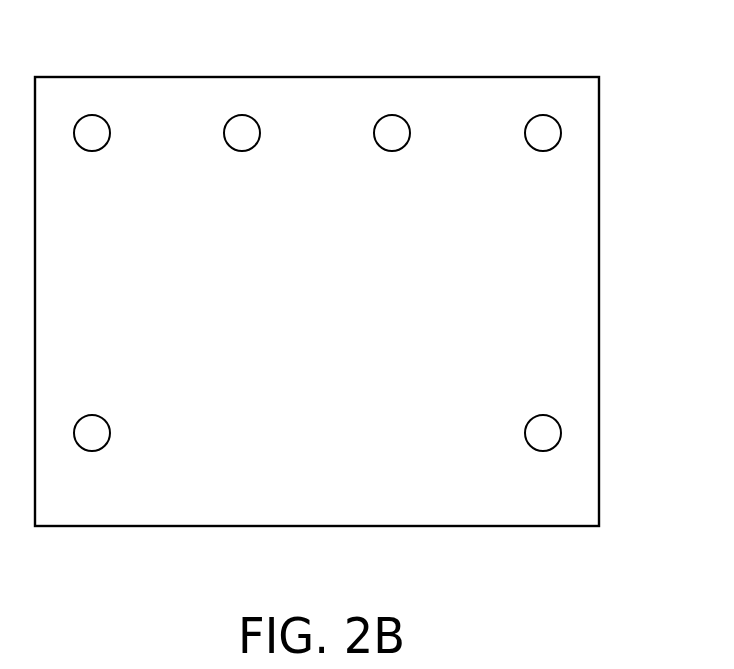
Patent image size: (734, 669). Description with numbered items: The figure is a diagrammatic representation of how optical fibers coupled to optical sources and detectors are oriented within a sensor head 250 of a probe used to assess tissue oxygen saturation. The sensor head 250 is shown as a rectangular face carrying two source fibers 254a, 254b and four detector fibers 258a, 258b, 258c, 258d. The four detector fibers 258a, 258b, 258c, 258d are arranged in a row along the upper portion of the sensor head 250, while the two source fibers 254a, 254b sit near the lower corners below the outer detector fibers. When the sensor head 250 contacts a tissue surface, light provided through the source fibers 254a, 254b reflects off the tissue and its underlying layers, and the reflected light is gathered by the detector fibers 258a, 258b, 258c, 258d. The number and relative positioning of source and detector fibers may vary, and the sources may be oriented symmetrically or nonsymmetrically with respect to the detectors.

The sensor head 250 is at (505, 75).
The detector fiber 258a is at (110, 125).
The detector fiber 258b is at (260, 125).
The detector fiber 258c is at (410, 125).
The detector fiber 258d is at (561, 127).
The source fiber 254a is at (108, 415).
The source fiber 254b is at (560, 420).